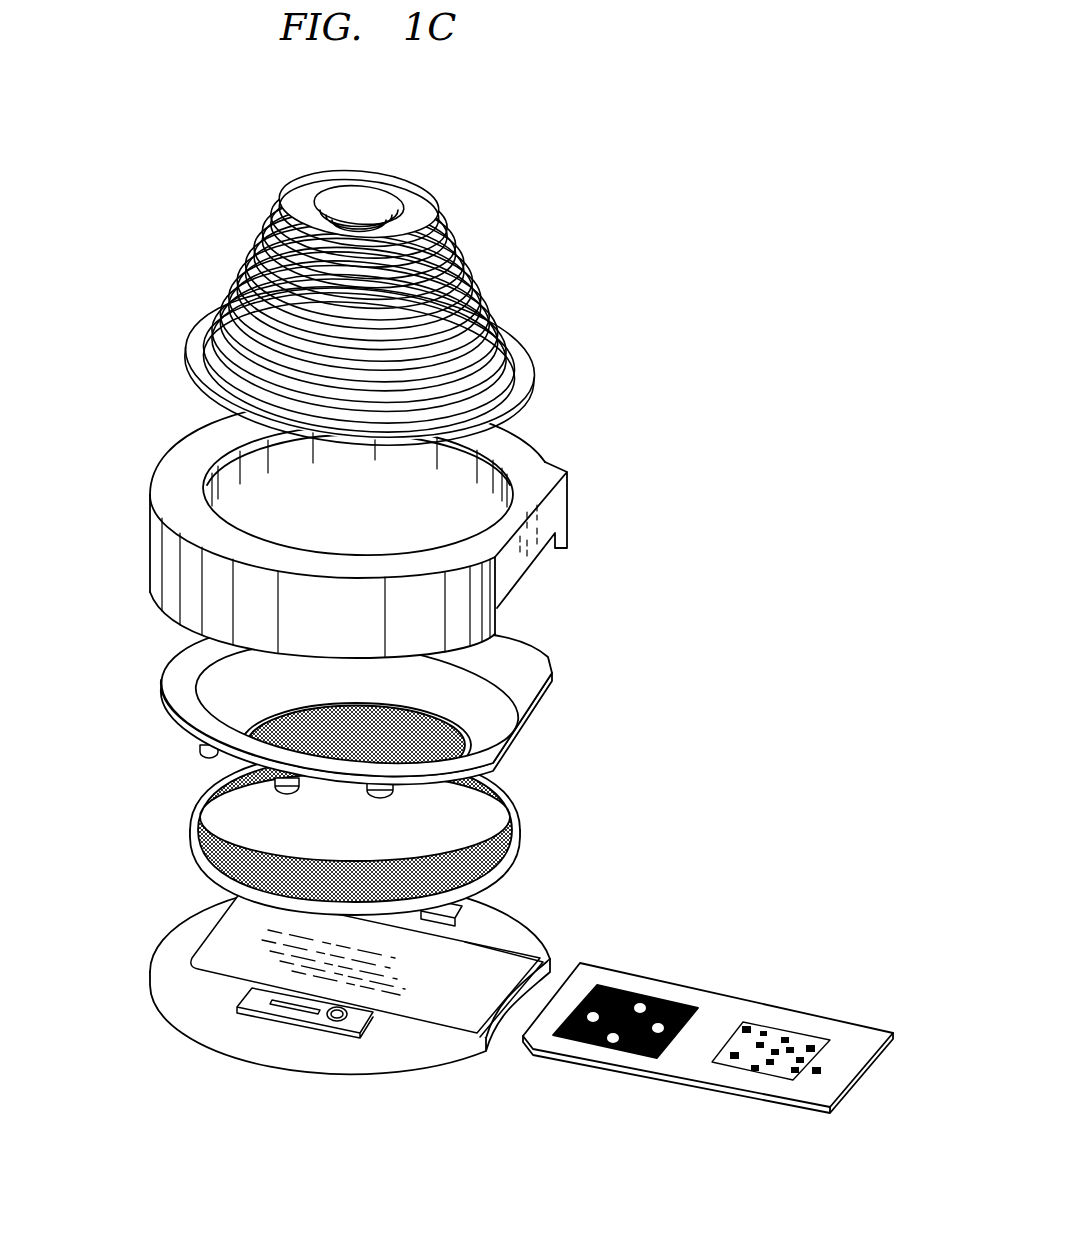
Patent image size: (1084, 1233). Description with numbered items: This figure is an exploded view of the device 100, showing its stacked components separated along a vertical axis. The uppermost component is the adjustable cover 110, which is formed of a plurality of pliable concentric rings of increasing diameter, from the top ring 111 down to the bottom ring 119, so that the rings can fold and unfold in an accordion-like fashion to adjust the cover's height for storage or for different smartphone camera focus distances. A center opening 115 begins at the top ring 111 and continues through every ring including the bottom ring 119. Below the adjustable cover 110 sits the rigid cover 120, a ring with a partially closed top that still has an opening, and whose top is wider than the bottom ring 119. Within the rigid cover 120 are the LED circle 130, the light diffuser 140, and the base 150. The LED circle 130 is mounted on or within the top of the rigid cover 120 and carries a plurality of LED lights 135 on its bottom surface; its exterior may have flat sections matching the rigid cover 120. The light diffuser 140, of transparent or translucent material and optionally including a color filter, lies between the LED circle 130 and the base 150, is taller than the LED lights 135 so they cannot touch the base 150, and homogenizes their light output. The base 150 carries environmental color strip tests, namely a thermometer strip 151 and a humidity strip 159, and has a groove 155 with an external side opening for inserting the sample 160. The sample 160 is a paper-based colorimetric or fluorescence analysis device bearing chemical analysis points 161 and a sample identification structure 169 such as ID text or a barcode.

The device 100 is at (383, 86).
The adjustable cover 110 is at (337, 302).
The top ring 111 is at (305, 197).
The center opening 115 is at (382, 202).
The bottom ring 119 is at (193, 343).
The rigid cover 120 is at (545, 452).
The LED circle 130 is at (533, 660).
The LED lights 135 is at (386, 706).
The light diffuser 140 is at (505, 808).
The base 150 is at (348, 987).
The thermometer strip 151 is at (297, 1007).
The groove 155 is at (228, 960).
The humidity strip 159 is at (462, 910).
The sample 160 is at (708, 1021).
The chemical analysis points 161 is at (620, 992).
The sample identification structure 169 is at (788, 1035).